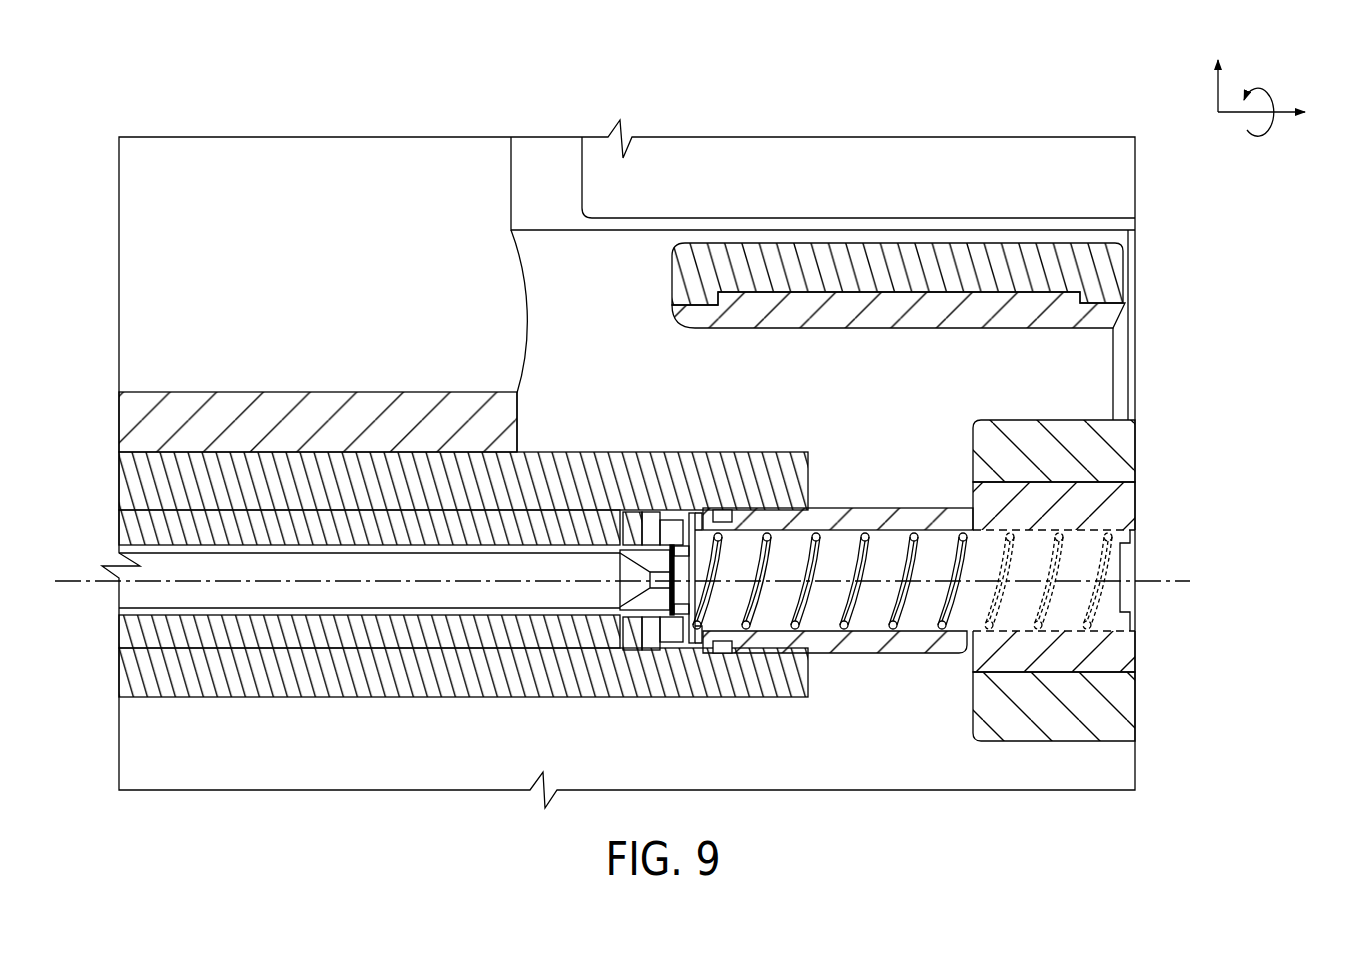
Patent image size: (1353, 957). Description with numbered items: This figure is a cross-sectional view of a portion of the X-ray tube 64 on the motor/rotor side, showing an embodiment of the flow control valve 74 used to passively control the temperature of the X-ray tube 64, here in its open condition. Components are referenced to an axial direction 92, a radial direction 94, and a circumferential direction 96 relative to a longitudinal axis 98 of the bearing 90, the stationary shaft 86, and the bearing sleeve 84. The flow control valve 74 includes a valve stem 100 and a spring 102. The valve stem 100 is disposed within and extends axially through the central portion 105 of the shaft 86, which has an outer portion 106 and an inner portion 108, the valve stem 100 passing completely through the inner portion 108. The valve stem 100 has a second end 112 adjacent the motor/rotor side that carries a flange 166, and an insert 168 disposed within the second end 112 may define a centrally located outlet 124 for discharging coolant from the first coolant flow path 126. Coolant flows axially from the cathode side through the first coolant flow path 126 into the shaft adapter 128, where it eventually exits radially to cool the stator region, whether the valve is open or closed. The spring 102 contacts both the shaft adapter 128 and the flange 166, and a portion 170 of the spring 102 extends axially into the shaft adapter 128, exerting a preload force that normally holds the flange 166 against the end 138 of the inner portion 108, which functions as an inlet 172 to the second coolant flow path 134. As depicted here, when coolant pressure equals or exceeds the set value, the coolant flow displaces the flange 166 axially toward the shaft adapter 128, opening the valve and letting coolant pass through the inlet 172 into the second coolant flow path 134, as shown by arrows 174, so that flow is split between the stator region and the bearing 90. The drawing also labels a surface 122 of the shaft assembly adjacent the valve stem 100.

The X-ray tube 64 is at (208, 92).
The flow control valve 74 is at (539, 492).
The bearing sleeve 84 is at (373, 393).
The stationary shaft 86 is at (450, 483).
The bearing 90 is at (260, 366).
The axial direction 92 is at (1284, 118).
The radial direction 94 is at (1218, 92).
The circumferential direction 96 is at (1264, 88).
The longitudinal axis 98 is at (1162, 581).
The valve stem 100 is at (358, 545).
The spring 102 is at (861, 606).
The central portion 105 is at (218, 536).
The outer portion 106 is at (323, 483).
The inner portion 108 is at (183, 530).
The second end 112 is at (773, 633).
The outer surface of shaft 122 is at (322, 563).
The outlet 124 is at (698, 601).
The first coolant flow path 126 is at (257, 560).
The shaft adapter 128 is at (977, 482).
The second coolant flow path 134 is at (453, 523).
The end 138 is at (642, 508).
The flange 166 is at (671, 625).
The insert 168 is at (648, 598).
The portion 170 is at (969, 525).
The inlet 172 is at (628, 538).
The arrows 174 is at (656, 537).